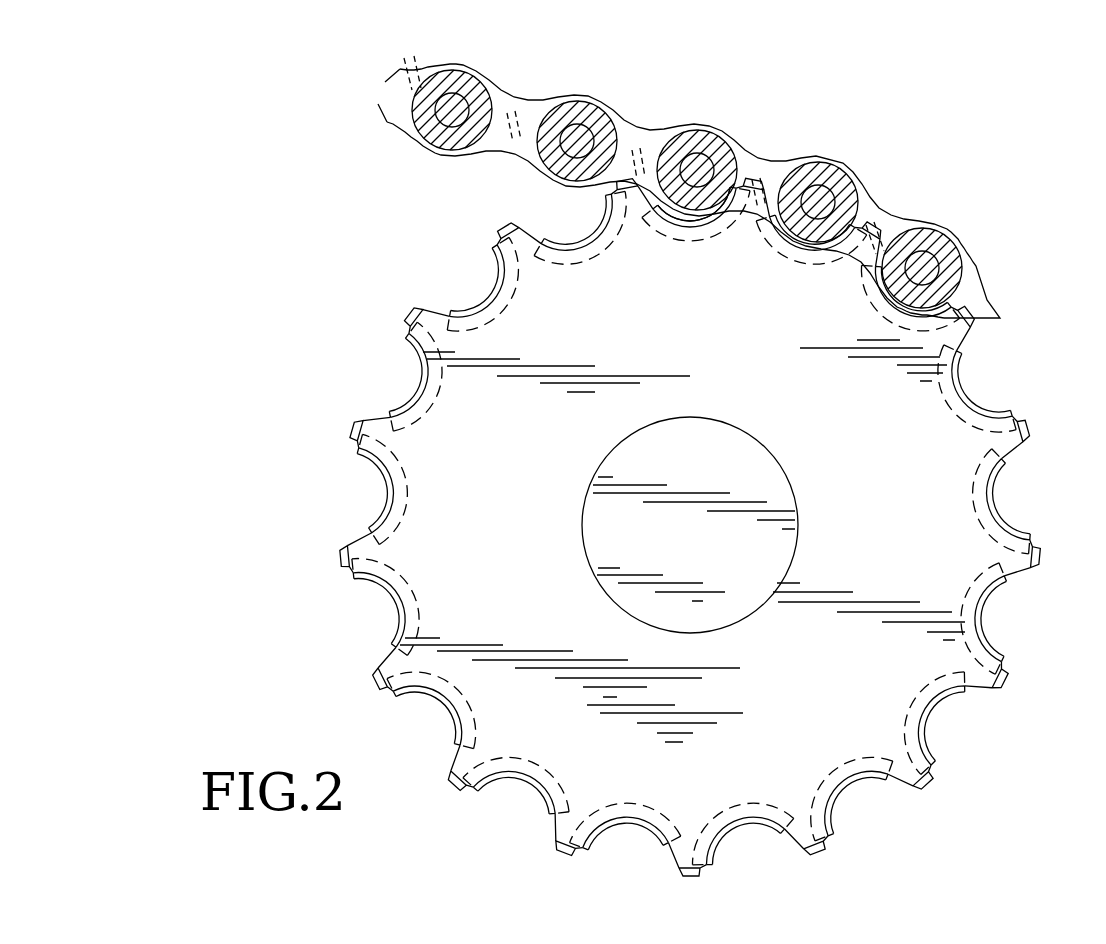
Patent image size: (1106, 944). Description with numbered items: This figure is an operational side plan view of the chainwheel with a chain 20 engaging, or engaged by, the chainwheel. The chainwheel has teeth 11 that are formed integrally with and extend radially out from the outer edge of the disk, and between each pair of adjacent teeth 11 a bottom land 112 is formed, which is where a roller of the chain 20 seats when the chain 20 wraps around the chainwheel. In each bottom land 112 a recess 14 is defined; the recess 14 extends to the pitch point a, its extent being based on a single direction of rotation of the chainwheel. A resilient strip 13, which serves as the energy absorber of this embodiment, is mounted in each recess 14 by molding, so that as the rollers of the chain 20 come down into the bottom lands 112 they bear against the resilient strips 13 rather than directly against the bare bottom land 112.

The chain 20 is at (657, 117).
The teeth 11 is at (630, 196).
The bottom land 112 is at (681, 214).
The resilient strips 13 is at (697, 215).
The recesses 14 is at (713, 232).
The pitch point a is at (738, 198).